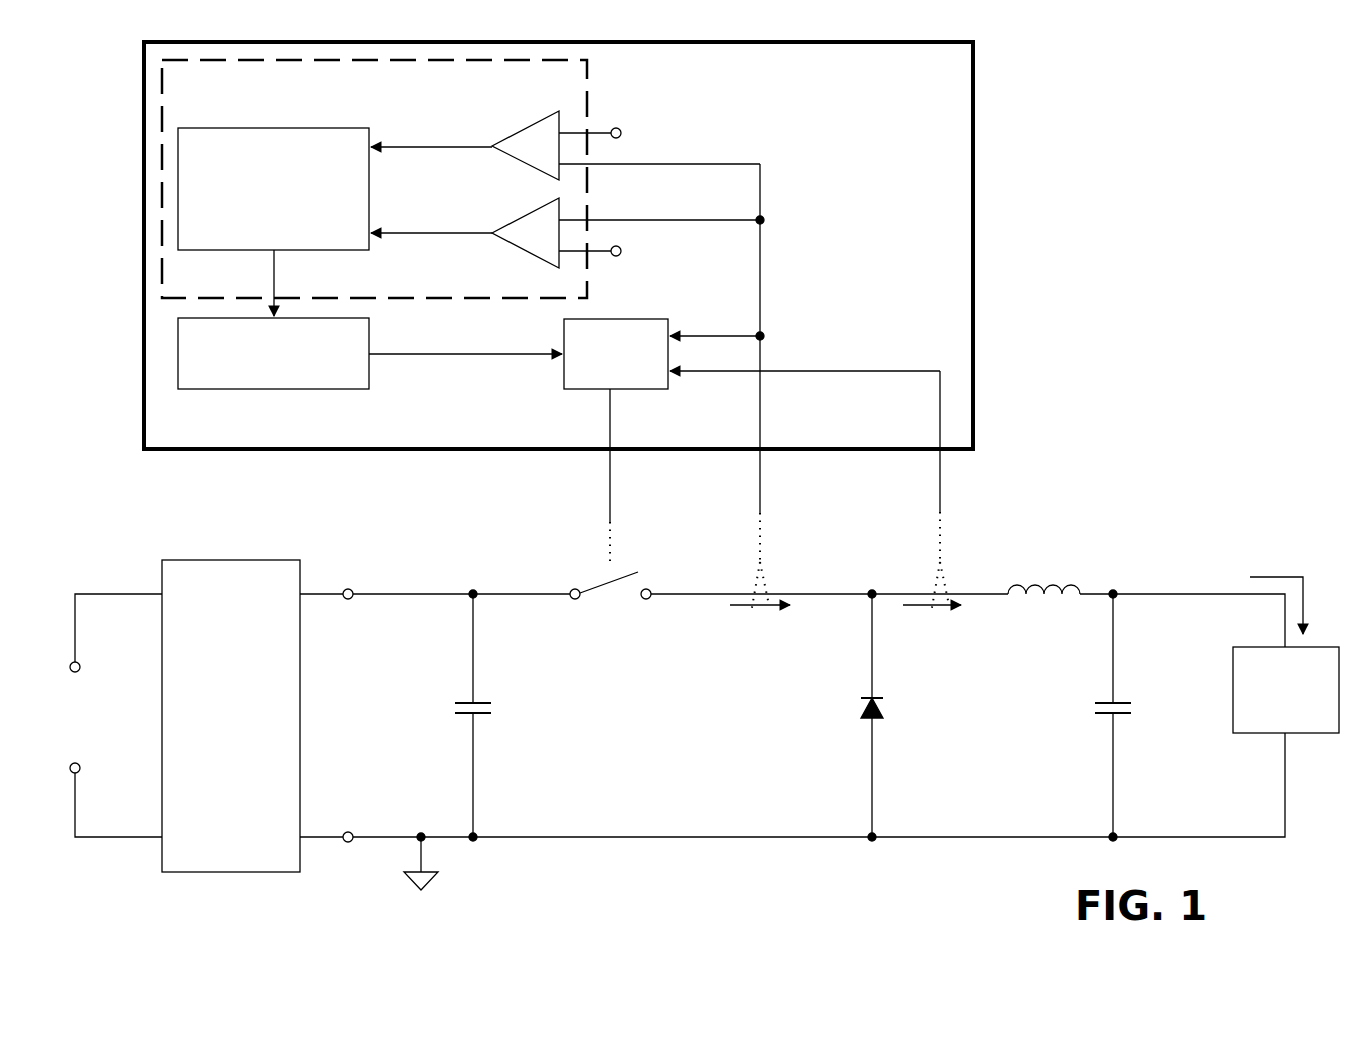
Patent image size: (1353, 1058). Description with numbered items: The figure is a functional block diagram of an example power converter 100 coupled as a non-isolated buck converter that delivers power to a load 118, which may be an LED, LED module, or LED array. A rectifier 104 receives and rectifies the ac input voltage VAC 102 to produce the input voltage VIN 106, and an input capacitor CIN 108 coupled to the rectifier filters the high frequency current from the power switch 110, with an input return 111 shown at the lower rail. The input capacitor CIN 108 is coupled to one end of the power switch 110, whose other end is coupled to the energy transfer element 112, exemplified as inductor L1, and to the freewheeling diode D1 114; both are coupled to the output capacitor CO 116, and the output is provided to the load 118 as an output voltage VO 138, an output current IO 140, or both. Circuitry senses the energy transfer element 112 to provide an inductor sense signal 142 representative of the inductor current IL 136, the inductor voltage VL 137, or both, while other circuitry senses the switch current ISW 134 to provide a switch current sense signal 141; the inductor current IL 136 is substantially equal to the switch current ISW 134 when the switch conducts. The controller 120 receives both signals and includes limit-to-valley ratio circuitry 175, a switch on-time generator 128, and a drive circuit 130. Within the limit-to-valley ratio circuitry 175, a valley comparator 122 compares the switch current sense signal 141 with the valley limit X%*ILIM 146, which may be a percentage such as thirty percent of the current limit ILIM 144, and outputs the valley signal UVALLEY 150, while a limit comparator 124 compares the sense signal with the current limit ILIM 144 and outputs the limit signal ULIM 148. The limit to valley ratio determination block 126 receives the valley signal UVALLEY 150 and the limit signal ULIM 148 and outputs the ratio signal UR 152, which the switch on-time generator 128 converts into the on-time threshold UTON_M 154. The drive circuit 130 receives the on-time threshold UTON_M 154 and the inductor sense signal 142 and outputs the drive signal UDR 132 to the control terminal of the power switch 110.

The power converter 100 is at (1262, 80).
The input voltage VAC 102 is at (97, 695).
The rectifier 104 is at (170, 558).
The input voltage VIN 106 is at (355, 730).
The input capacitor CIN 108 is at (506, 740).
The power switch 110 is at (628, 621).
The input return 111 is at (432, 890).
The energy transfer element 112 is at (1043, 620).
The freewheeling diode D1 114 is at (835, 726).
The output capacitor CO 116 is at (1092, 716).
The load 118 is at (1300, 740).
The controller 120 is at (1017, 101).
The valley comparator 122 is at (525, 109).
The limit comparator 124 is at (505, 246).
The limit to valley ratio determination block 126 is at (226, 112).
The switch on-time generator 128 is at (272, 392).
The drive circuit 130 is at (653, 398).
The drive signal UDR 132 is at (559, 538).
The switch current ISW 134 is at (754, 657).
The inductor current IL 136 is at (938, 660).
The inductor voltage VL 137 is at (1048, 525).
The output voltage VO 138 is at (1170, 718).
The output current IO 140 is at (1286, 498).
The switch current sense signal 141 is at (747, 521).
The inductor sense signal 142 is at (952, 508).
The current limit ILIM 144 is at (668, 265).
The valley limit X%*ILIM 146 is at (735, 133).
The limit signal ULIM 148 is at (427, 240).
The valley signal UVALLEY 150 is at (386, 106).
The ratio signal UR 152 is at (276, 272).
The on-time threshold UTON_M 154 is at (481, 367).
The limit-to-valley ratio circuitry 175 is at (593, 92).